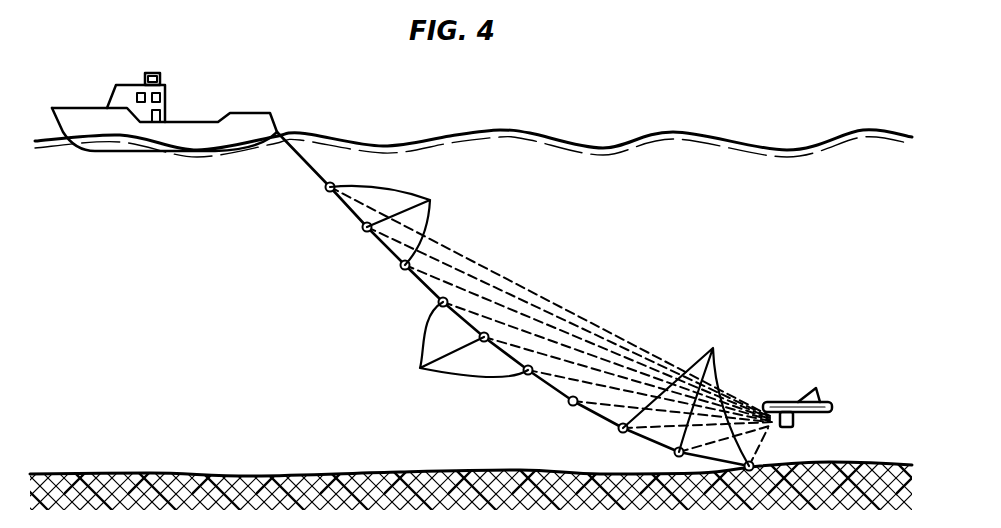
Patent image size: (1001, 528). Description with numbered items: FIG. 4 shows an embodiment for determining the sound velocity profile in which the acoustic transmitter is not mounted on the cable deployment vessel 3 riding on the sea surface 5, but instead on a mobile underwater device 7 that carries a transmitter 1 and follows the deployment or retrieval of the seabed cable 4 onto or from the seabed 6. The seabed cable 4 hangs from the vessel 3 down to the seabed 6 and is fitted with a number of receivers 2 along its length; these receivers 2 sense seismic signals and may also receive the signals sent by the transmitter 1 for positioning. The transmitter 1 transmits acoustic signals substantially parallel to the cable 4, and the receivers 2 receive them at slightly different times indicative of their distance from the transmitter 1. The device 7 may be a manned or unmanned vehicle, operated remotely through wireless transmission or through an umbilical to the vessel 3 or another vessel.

The acoustic transmitter 1 is at (807, 396).
The receivers 2 is at (432, 201).
The cable deployment vessel 3 is at (69, 108).
The seabed cable 4 is at (305, 160).
The sea surface 5 is at (677, 132).
The seabed 6 is at (158, 472).
The mobile underwater device 7 is at (785, 402).